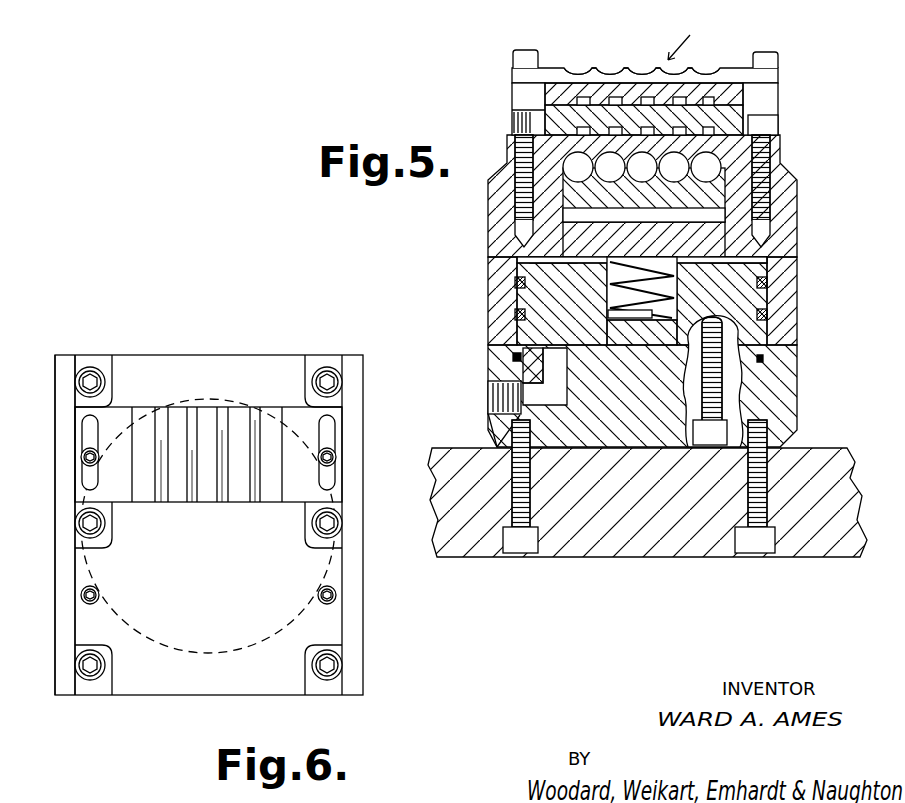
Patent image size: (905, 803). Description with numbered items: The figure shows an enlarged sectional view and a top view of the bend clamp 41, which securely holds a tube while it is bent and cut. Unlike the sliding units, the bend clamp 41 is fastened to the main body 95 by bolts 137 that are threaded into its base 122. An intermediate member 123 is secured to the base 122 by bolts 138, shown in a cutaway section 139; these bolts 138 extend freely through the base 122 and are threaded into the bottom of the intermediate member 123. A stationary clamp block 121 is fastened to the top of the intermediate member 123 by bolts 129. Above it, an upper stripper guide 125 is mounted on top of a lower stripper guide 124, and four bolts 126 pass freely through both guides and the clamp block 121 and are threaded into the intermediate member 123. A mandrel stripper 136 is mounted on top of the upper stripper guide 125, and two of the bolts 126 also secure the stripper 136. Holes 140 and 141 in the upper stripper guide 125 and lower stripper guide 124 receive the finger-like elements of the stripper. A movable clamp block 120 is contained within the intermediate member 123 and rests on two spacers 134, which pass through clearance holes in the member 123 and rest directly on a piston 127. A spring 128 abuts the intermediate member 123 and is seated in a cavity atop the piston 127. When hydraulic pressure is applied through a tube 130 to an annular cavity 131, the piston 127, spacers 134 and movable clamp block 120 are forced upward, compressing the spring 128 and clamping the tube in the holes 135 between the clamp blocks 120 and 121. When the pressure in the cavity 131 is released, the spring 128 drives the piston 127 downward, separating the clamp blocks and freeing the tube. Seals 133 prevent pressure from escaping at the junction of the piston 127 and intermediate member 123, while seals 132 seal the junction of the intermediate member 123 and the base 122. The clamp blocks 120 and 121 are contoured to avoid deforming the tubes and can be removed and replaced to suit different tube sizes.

In FIG. 5, the bend clamp 41 is at (687, 36).
In FIG. 5, the main body 95 is at (633, 549).
In FIG. 5, the movable clamp block 120 is at (567, 190).
In FIG. 5, the stationary clamp block 121 is at (507, 143).
In FIG. 6, the stationary clamp block 121 is at (84, 362).
In FIG. 5, the base 122 is at (490, 437).
In FIG. 5, the intermediate member 123 is at (497, 322).
In FIG. 6, the intermediate member 123 is at (60, 689).
In FIG. 5, the lower stripper guide 124 is at (776, 110).
In FIG. 6, the lower stripper guide 124 is at (337, 362).
In FIG. 5, the upper stripper guide 125 is at (513, 93).
In FIG. 6, the upper stripper guide 125 is at (247, 365).
In FIG. 5, the bolts 126 is at (522, 55).
In FIG. 6, the bolts 126 is at (84, 457).
In FIG. 5, the piston 127 is at (520, 258).
In FIG. 6, the piston 127 is at (213, 655).
In FIG. 5, the spring 128 is at (615, 290).
In FIG. 5, the bolts 129 is at (772, 186).
In FIG. 6, the bolts 129 is at (327, 380).
In FIG. 5, the tube 130 is at (498, 398).
In FIG. 5, the annular cavity 131 is at (521, 343).
In FIG. 5, the seals 132 is at (774, 361).
In FIG. 5, the seals 133 is at (767, 283).
In FIG. 5, the spacers 134 is at (720, 220).
In FIG. 5, the holes 135 is at (575, 158).
In FIG. 5, the mandrel stripper 136 is at (628, 66).
In FIG. 6, the mandrel stripper 136 is at (337, 413).
In FIG. 5, the bolts 137 is at (513, 512).
In FIG. 5, the bolts 138 is at (722, 388).
In FIG. 5, the cutaway section 139 is at (726, 400).
In FIG. 5, the holes 140 is at (707, 96).
In FIG. 5, the holes 141 is at (712, 133).